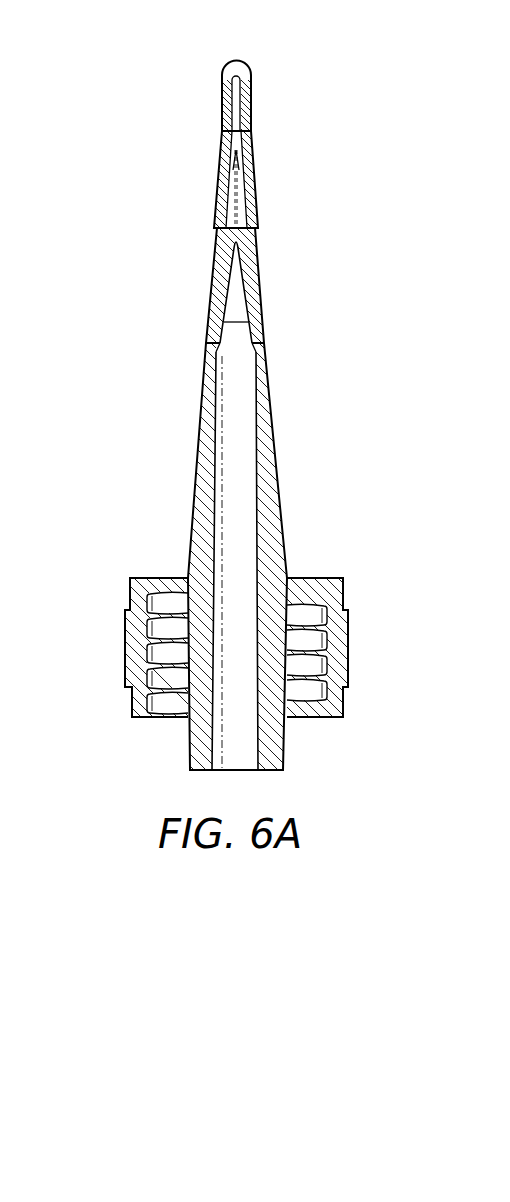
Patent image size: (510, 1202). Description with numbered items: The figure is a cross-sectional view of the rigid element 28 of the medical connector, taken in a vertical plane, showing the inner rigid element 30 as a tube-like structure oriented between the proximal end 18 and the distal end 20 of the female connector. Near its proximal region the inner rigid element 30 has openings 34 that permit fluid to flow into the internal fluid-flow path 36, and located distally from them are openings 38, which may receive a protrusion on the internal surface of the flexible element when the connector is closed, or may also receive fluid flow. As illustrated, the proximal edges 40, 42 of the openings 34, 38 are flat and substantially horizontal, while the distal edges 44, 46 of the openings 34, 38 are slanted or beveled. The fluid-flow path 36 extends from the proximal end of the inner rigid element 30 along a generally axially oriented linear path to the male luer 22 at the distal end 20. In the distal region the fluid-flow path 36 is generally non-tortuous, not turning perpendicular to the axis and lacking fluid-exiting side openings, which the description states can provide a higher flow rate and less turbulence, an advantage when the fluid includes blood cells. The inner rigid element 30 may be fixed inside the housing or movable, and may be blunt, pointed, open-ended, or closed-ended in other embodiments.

The proximal end 18 is at (283, 57).
The distal end 20 is at (168, 737).
The male luer 22 is at (283, 745).
The rigid element 28 is at (293, 350).
The inner rigid element 30 is at (280, 480).
The openings 34 is at (225, 157).
The fluid-flow path 36 is at (230, 483).
The openings 38 is at (217, 290).
The proximal edge 40 is at (222, 133).
The proximal edge 42 is at (213, 229).
The distal edge 44 is at (257, 167).
The distal edge 46 is at (263, 345).